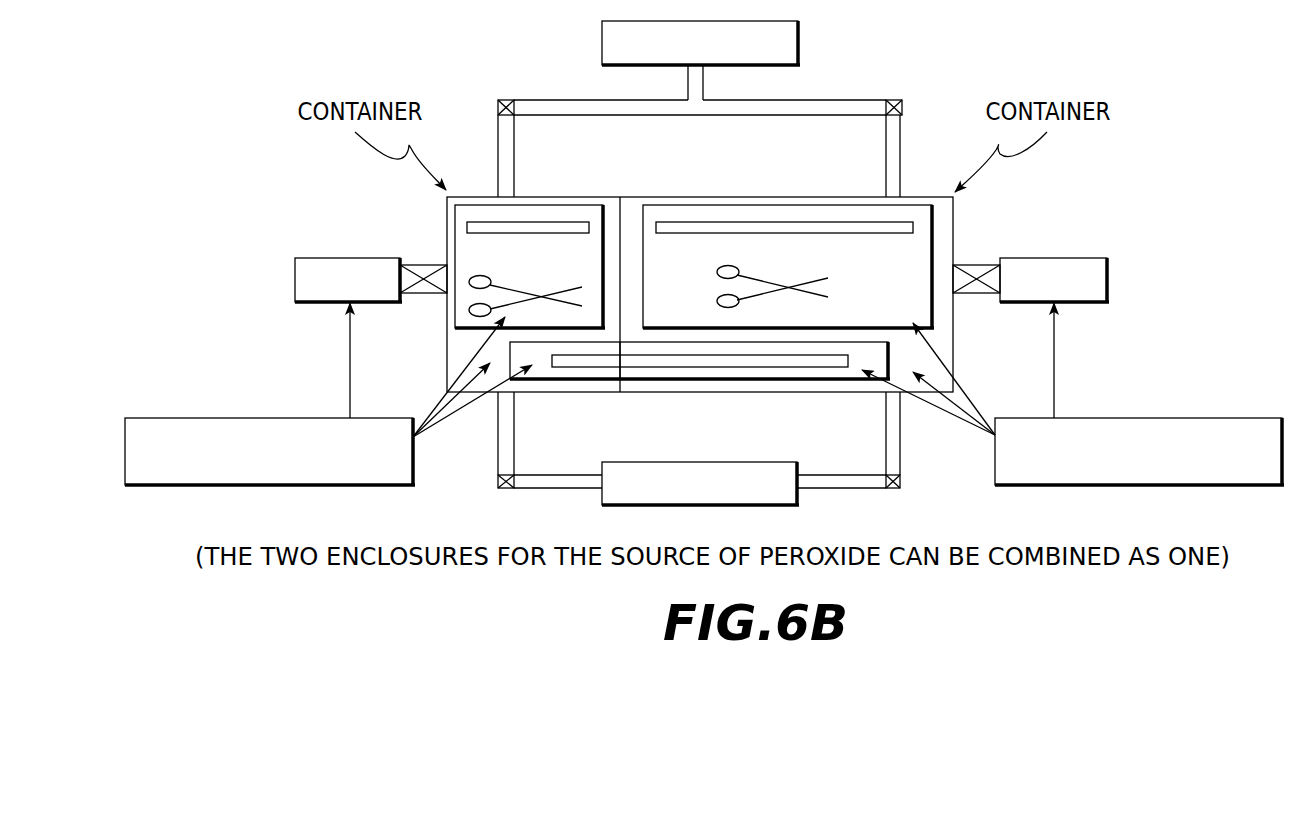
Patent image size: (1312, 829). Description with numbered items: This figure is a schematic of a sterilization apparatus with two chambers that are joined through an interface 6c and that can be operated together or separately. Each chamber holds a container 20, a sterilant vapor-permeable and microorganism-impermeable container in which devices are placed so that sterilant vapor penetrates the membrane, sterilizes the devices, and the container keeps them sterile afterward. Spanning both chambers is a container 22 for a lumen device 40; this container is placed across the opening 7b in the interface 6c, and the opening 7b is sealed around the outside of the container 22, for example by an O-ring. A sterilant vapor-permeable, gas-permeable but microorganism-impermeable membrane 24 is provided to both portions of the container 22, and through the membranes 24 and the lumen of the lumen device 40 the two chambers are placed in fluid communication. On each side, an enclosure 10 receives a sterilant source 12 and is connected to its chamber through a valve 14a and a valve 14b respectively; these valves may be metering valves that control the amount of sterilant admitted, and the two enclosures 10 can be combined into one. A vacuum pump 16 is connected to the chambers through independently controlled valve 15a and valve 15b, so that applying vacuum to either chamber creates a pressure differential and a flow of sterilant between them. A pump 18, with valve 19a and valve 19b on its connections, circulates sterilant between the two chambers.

The vacuum pump 16 is at (650, 20).
The valve 15a is at (506, 100).
The valve 15b is at (894, 100).
The interface 6c is at (628, 221).
The container 20 is at (694, 267).
The container for lumen device 22 is at (767, 373).
The lumen device 40 is at (697, 366).
The opening 7b is at (621, 380).
The pump 18 is at (700, 484).
The valve 19a is at (499, 490).
The valve 19b is at (887, 490).
The valve 14a is at (422, 263).
The valve 14b is at (968, 262).
The enclosure 10 is at (702, 280).
The sterilant source 12 is at (704, 394).
The membrane 24 is at (913, 385).